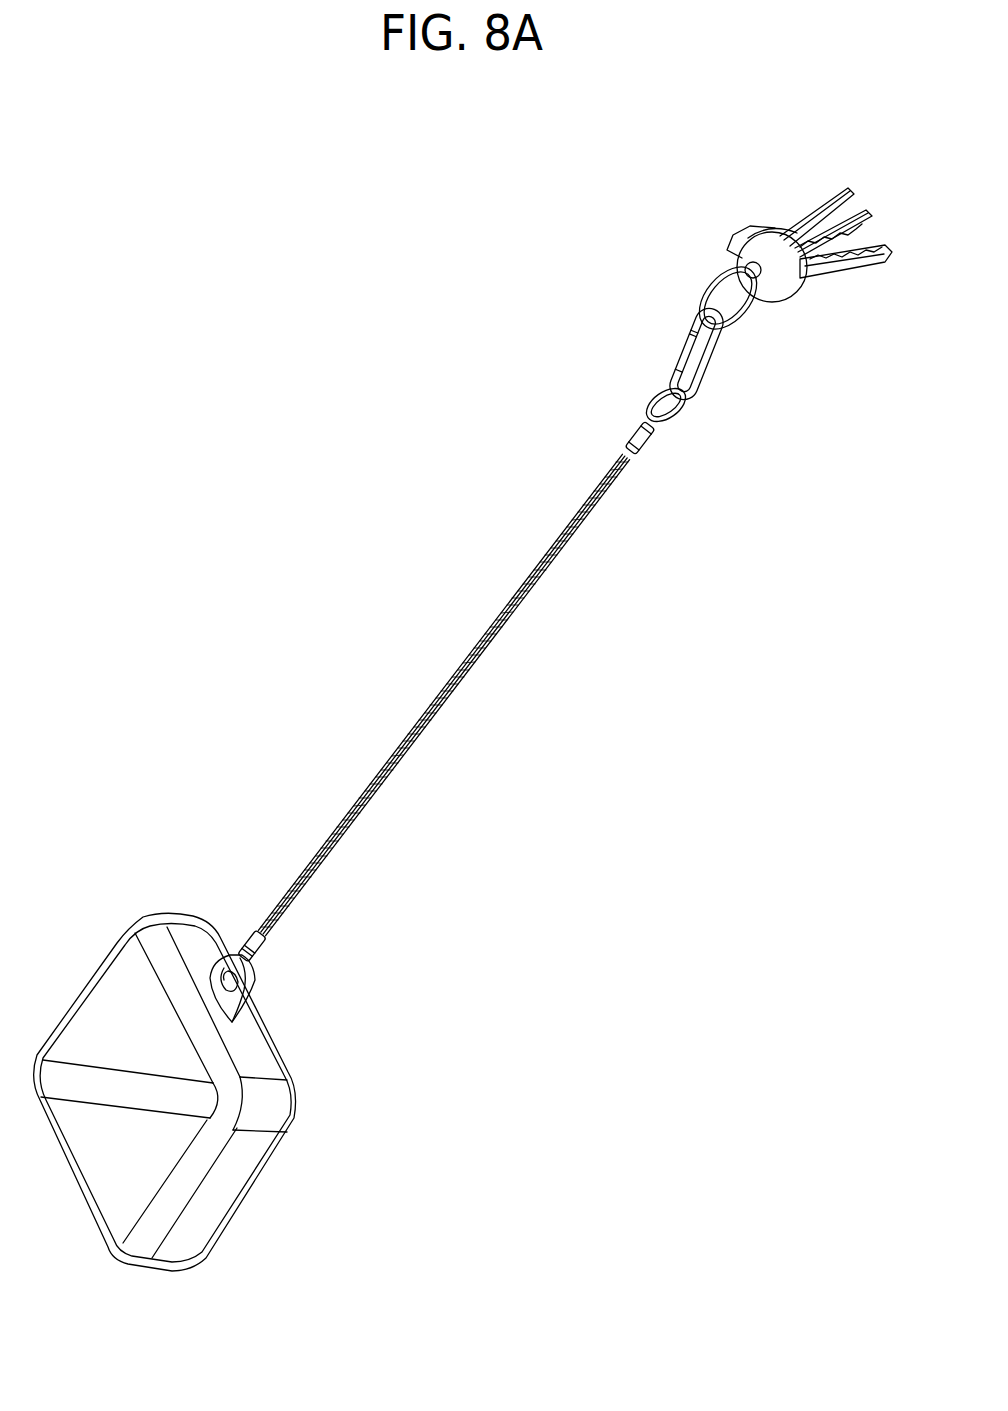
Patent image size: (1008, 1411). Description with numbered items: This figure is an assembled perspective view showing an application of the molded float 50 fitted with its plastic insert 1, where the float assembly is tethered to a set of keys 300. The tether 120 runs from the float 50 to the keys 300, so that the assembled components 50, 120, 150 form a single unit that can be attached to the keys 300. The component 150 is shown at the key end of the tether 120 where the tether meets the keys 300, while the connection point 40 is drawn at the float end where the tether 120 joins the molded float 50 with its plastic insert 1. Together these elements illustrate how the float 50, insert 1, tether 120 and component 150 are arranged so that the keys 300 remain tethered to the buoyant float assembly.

The plastic insert 1 is at (201, 945).
The attachment loop 40 is at (250, 998).
The molded float 50 is at (319, 1049).
The tether 120 is at (483, 648).
The assembled component 150 is at (690, 330).
The set of keys 300 is at (747, 202).